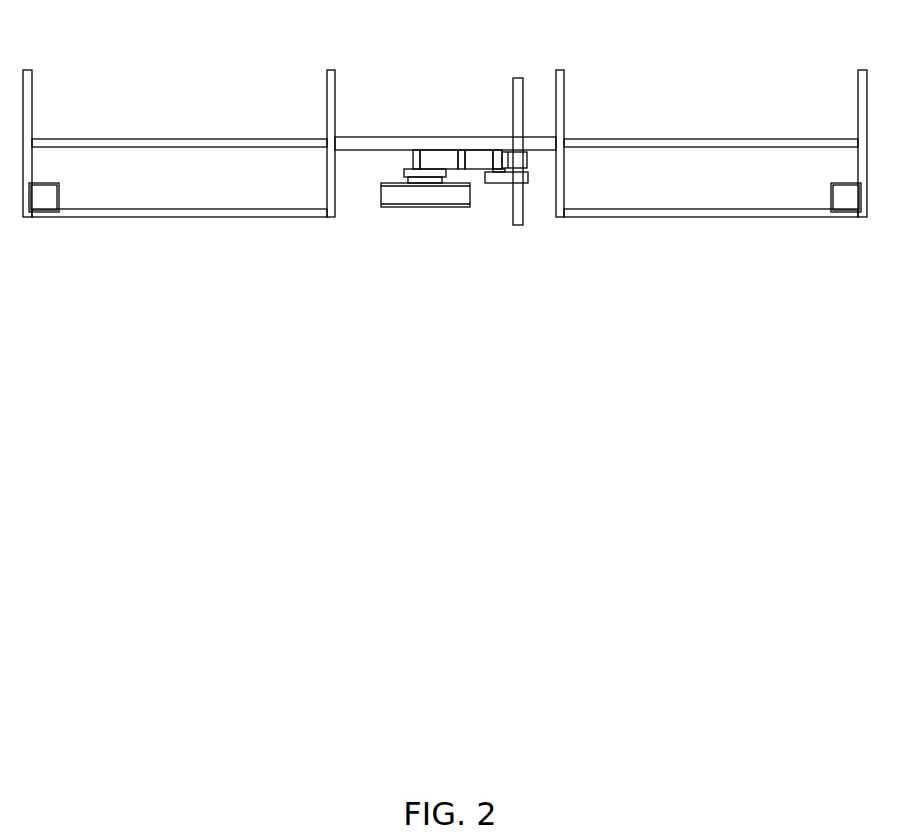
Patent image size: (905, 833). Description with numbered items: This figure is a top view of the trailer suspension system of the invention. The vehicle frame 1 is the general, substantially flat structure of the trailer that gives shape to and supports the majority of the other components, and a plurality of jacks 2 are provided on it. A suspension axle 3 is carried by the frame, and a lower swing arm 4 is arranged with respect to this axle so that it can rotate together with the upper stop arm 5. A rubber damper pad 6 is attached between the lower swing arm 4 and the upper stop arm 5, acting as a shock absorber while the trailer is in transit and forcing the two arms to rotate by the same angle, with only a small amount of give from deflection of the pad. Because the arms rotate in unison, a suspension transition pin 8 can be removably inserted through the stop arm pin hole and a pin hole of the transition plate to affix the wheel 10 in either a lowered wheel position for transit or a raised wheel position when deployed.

The vehicle frame 1 is at (298, 126).
The jacks 2 is at (44, 204).
The suspension axle 3 is at (517, 90).
The lower swing arm 4 is at (427, 160).
The drive motor 5 is at (480, 160).
The rubber damper pad 6 is at (518, 152).
The suspension transition pin 8 is at (508, 175).
The wheel 10 is at (423, 203).